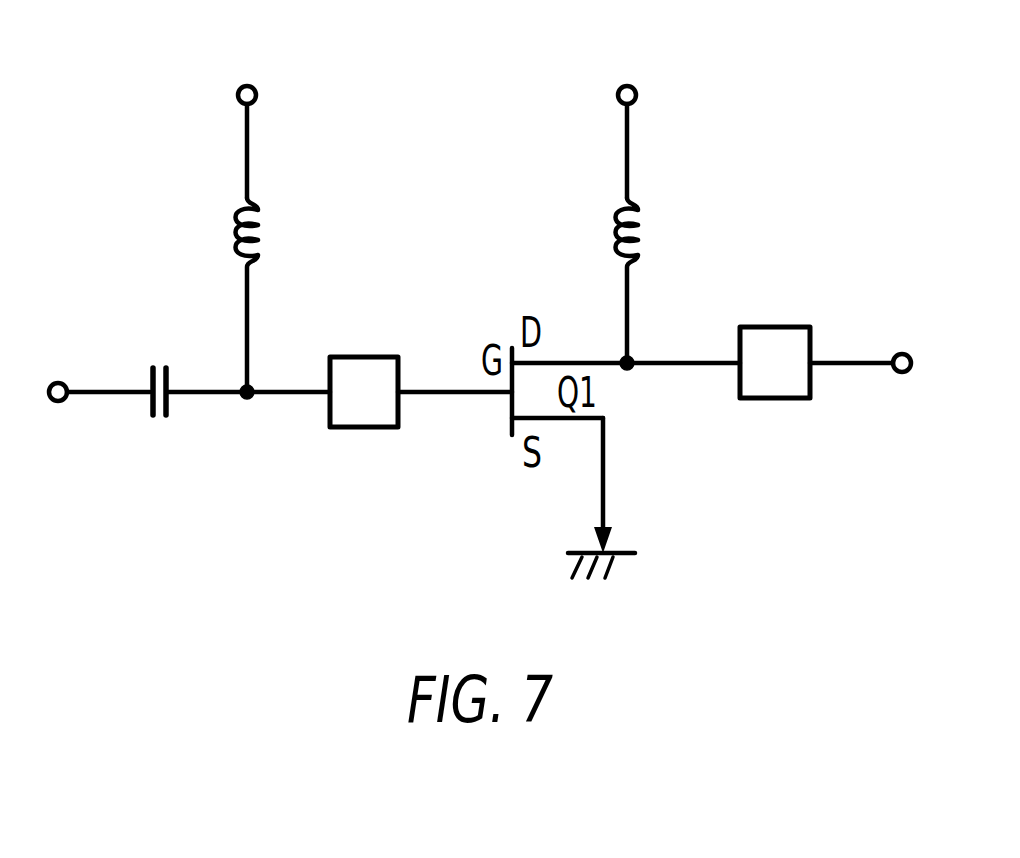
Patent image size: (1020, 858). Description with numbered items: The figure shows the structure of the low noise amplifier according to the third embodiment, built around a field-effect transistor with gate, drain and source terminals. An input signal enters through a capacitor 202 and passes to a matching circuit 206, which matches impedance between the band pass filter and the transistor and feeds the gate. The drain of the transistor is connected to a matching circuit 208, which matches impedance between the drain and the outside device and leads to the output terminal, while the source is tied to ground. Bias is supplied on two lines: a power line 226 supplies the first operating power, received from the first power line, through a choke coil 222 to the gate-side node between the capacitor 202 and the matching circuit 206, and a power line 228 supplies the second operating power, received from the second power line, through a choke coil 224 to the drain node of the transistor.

The capacitor 202 is at (151, 337).
The matching circuit 206 is at (364, 357).
The matching circuit 208 is at (779, 327).
The choke coil 222 is at (296, 222).
The choke coil 224 is at (675, 220).
The power line 226 is at (248, 86).
The power line 228 is at (627, 86).